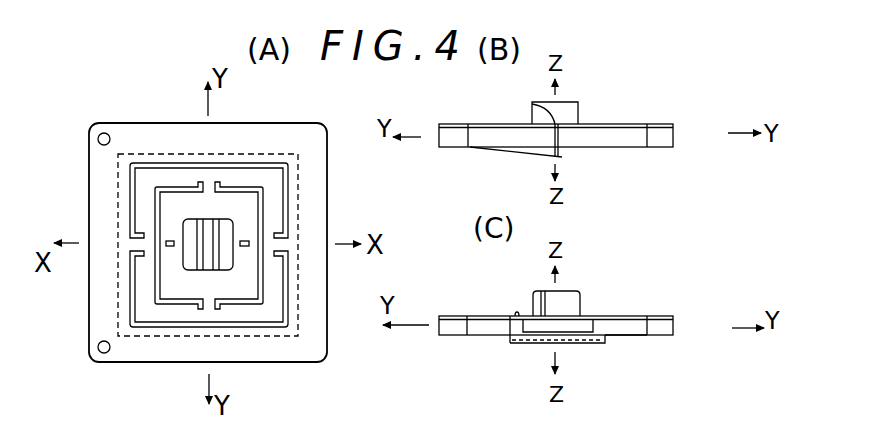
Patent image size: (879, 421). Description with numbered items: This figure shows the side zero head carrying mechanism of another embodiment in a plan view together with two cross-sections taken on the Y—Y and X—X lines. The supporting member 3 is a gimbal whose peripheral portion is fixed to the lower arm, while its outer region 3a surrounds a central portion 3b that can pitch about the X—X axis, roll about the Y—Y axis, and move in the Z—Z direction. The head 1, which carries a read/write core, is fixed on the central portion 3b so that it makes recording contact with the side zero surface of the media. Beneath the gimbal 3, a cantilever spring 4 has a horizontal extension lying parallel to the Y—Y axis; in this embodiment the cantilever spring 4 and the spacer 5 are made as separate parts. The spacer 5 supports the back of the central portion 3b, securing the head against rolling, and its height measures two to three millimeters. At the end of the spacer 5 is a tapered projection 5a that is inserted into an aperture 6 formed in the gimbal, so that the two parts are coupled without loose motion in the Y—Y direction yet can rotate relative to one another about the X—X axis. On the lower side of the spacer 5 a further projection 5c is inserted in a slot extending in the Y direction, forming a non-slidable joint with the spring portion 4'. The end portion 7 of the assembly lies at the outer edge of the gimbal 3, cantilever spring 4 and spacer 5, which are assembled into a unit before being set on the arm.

The head 1 is at (223, 263).
The supporting member (gimbal) 3 is at (277, 203).
The outer frame of support plate 3a is at (101, 186).
The central portion 3b is at (173, 204).
The cantilever spring 4 is at (536, 267).
The piezoelectric element 4' is at (644, 360).
The spacer 5 is at (563, 133).
The projection 5a is at (532, 104).
The projection 5c is at (565, 343).
The aperture 6 is at (245, 241).
The end portion 7 is at (675, 138).